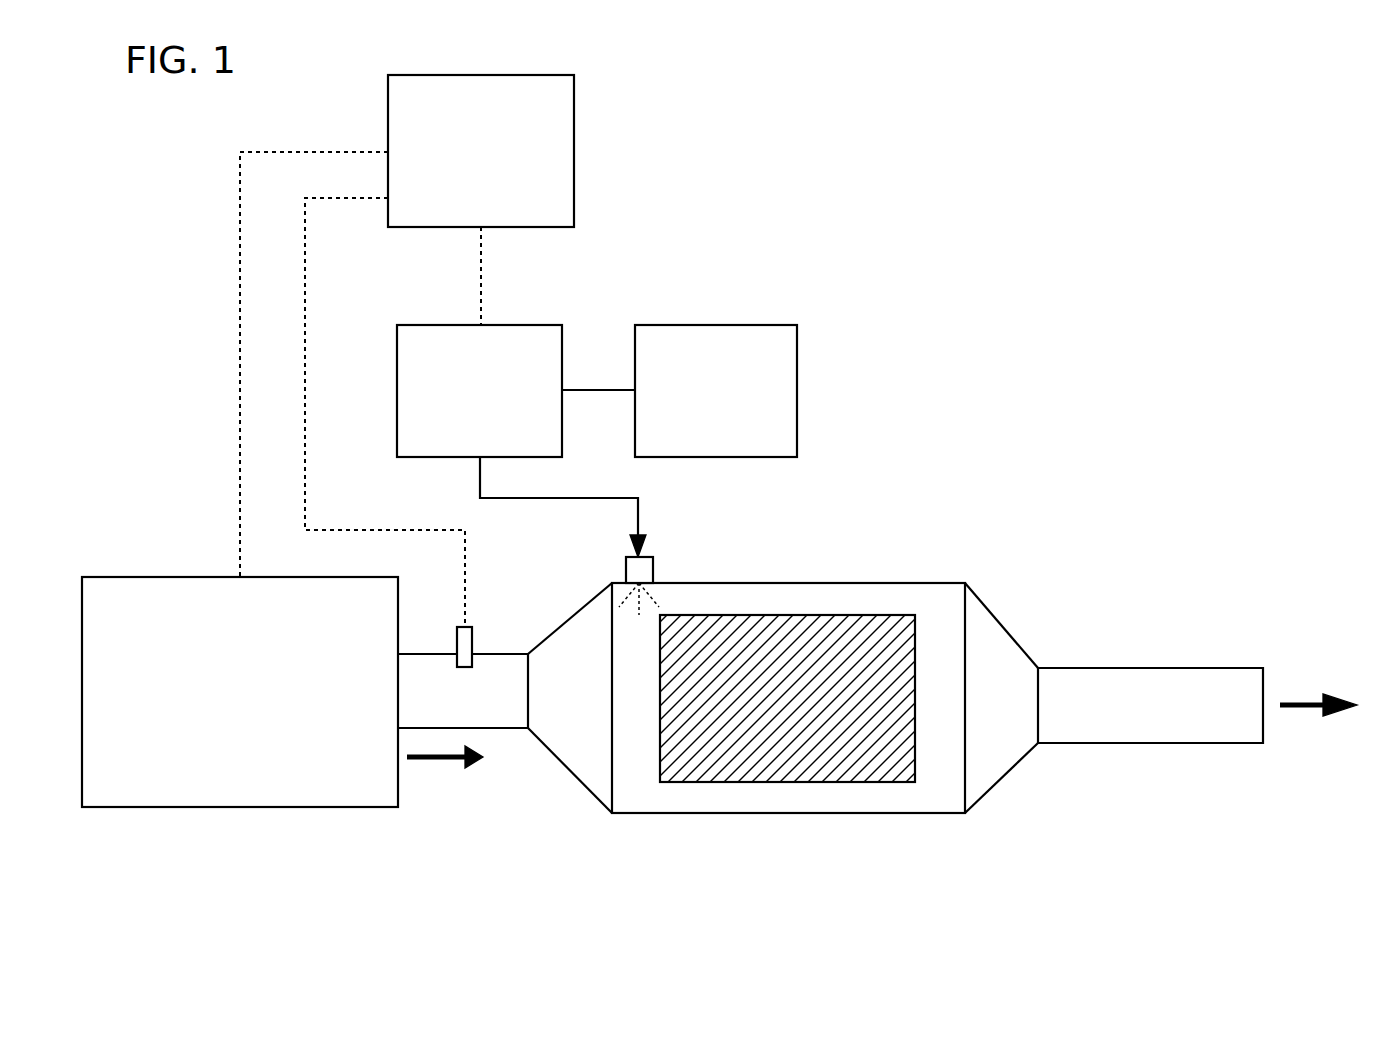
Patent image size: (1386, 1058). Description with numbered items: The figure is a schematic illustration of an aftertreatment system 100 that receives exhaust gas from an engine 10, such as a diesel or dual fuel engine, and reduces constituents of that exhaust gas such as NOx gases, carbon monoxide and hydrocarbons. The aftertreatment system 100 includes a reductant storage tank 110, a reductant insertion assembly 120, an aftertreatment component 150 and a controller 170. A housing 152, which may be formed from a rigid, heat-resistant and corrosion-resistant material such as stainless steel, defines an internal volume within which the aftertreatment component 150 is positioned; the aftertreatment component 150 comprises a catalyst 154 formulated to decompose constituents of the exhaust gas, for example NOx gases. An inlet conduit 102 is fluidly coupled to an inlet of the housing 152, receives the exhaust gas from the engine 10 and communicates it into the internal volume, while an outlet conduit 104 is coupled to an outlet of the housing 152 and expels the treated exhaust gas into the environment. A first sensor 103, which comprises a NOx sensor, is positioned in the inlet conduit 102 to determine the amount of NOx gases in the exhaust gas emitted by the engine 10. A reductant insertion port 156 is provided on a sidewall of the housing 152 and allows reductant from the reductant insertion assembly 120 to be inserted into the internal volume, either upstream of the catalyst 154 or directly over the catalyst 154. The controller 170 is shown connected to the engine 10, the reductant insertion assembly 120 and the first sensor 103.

The aftertreatment system 100 is at (1153, 170).
The engine 10 is at (240, 692).
The controller 170 is at (481, 151).
The reductant insertion assembly 120 is at (479, 391).
The reductant storage tank 110 is at (716, 391).
The inlet conduit 102 is at (513, 713).
The first sensor 103 is at (468, 640).
The outlet conduit 104 is at (1227, 735).
The aftertreatment component 150 is at (787, 710).
The housing 152 is at (843, 813).
The catalyst 154 is at (878, 760).
The reductant insertion port 156 is at (638, 572).